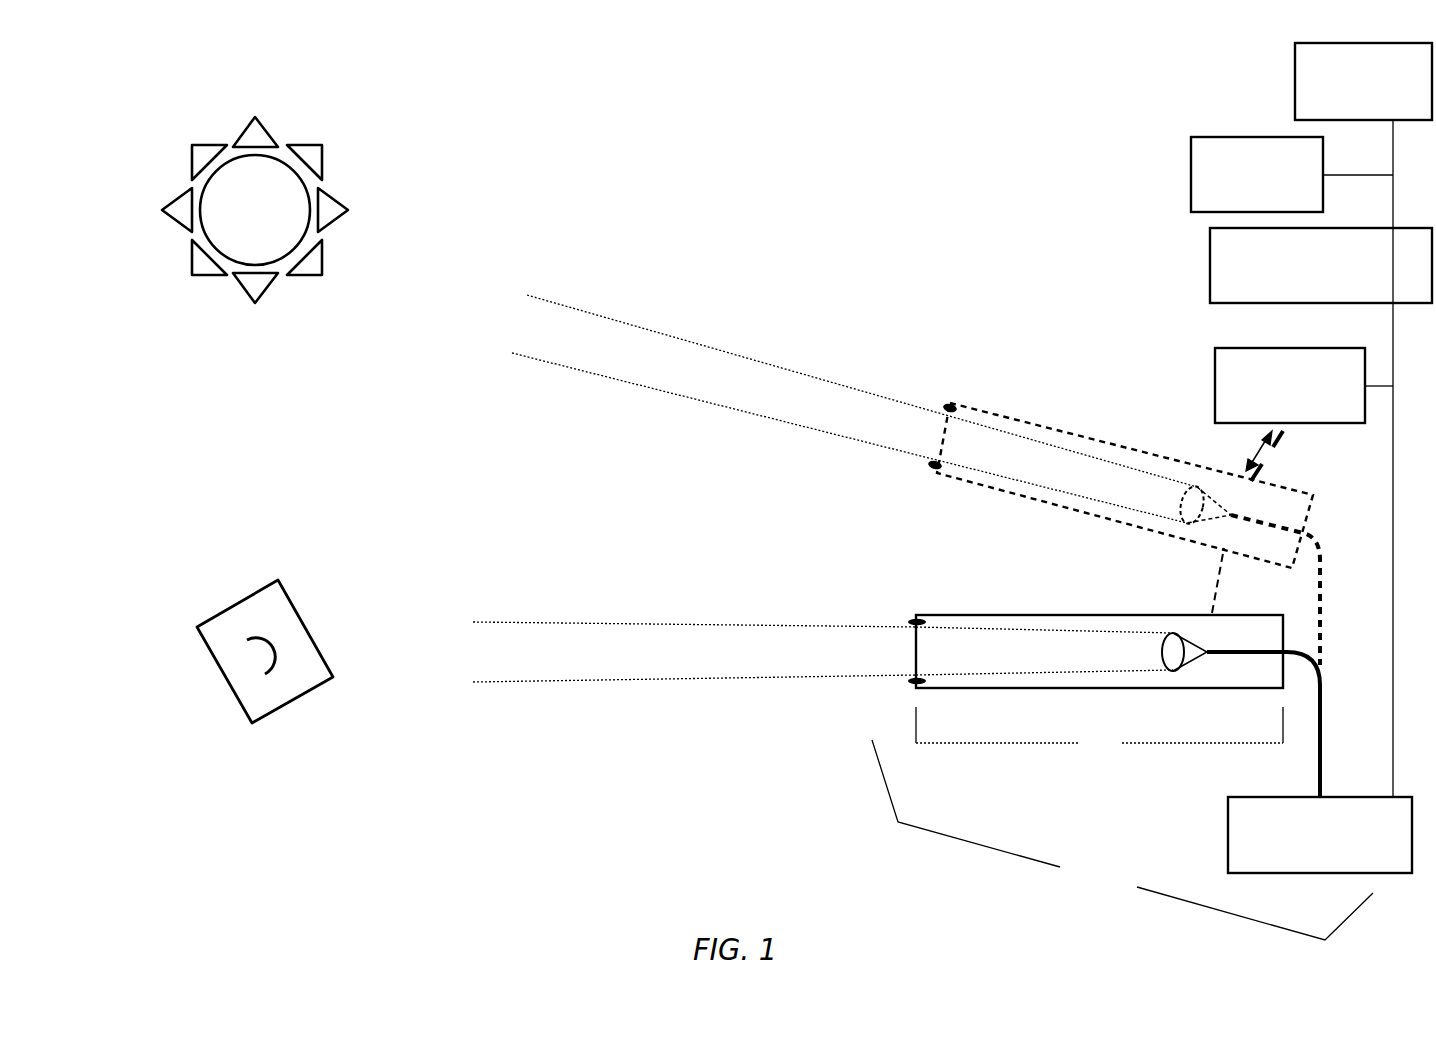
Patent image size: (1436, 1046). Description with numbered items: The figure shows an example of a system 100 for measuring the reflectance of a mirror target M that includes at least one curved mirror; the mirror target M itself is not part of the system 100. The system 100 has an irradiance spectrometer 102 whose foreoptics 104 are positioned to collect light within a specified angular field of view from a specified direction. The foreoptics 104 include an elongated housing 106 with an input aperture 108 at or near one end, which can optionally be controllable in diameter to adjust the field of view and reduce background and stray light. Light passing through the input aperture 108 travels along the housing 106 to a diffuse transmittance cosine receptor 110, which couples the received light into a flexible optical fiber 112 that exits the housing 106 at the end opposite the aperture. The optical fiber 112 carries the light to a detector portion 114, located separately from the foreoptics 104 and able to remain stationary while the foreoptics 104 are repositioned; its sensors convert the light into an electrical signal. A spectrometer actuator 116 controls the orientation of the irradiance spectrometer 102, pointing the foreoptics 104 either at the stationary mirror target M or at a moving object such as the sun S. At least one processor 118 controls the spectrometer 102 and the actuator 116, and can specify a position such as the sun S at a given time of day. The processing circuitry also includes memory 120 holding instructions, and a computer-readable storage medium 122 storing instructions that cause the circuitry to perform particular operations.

The system 100 is at (658, 228).
The irradiance spectrometer 102 is at (1122, 840).
The foreoptics 104 is at (1099, 734).
The elongated housing 106 is at (1066, 613).
The input aperture 108 is at (908, 622).
The diffuse transmittance cosine receptor 110 is at (1175, 632).
The optical fiber 112 is at (1318, 780).
The detector portion 114 is at (1228, 838).
The spectrometer actuator 116 is at (1215, 386).
The processor 118 is at (1210, 266).
The memory 120 is at (1191, 175).
The computer-readable storage medium 122 is at (1295, 82).
The sun S is at (192, 273).
The mirror target M is at (222, 678).